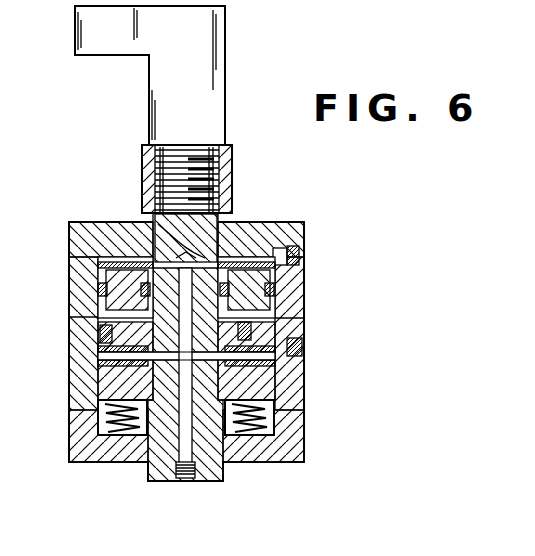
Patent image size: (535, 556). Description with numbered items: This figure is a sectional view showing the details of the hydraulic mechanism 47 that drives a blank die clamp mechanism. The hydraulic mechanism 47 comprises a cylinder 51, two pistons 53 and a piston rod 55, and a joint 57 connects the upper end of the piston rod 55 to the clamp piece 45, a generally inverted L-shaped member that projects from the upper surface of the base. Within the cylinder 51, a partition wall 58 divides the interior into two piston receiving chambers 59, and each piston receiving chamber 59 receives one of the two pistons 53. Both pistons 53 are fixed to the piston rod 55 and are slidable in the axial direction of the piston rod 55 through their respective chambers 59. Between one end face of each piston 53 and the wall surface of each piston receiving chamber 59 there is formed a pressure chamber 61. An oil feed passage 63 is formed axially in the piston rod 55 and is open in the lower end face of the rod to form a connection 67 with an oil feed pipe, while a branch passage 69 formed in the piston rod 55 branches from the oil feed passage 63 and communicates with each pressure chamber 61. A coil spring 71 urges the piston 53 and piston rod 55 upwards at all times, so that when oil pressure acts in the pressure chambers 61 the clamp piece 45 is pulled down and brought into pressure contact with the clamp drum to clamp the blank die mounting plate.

The clamp piece 45 is at (226, 44).
The hydraulic mechanism 47 is at (247, 207).
The cylinder 51 is at (285, 224).
The piston 53 is at (100, 302).
The piston rod 55 is at (150, 470).
The joint 57 is at (142, 172).
The partition wall 58 is at (300, 326).
The piston receiving chamber 59 is at (292, 318).
The pressure chamber 61 is at (285, 283).
The oil feed passage 63 is at (195, 462).
The connection 67 is at (186, 482).
The branch passage 69 is at (163, 240).
The coil spring 71 is at (265, 420).